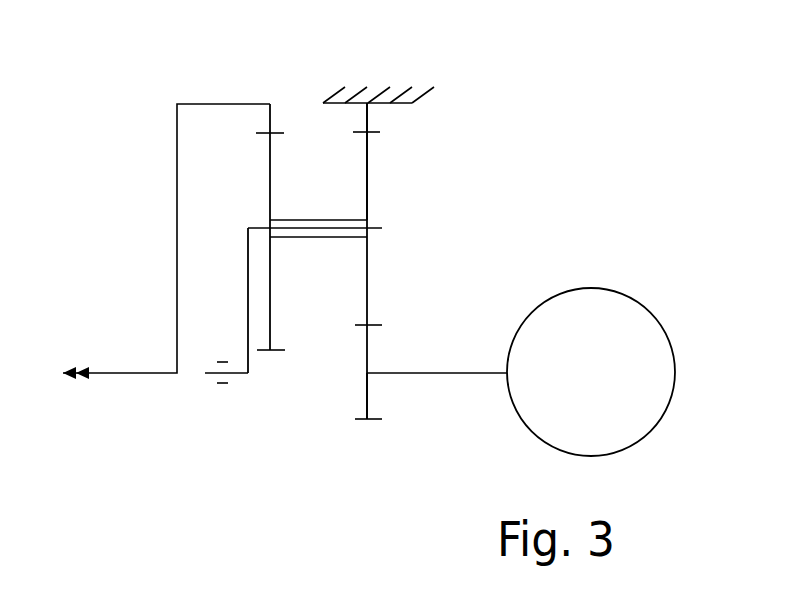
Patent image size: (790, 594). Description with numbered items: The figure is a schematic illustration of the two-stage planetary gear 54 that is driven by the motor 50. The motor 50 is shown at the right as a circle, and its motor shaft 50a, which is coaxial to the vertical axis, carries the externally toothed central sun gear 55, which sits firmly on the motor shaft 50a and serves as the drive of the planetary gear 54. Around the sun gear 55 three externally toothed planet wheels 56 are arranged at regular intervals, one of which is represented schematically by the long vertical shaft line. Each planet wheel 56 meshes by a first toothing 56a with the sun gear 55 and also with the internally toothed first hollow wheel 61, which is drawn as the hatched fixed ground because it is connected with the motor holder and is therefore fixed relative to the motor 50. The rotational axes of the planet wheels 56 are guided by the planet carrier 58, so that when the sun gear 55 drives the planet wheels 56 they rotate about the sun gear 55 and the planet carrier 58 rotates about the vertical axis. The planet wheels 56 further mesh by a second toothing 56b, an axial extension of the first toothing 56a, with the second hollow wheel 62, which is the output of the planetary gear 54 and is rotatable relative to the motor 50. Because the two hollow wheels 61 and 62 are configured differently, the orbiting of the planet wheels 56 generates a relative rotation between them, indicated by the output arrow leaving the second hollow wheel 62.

The motor 50 is at (612, 390).
The motor shaft 50a is at (438, 370).
The planetary gear 54 is at (442, 227).
The sun gear 55 is at (367, 390).
The planet wheels 56 is at (368, 288).
The first toothing 56a is at (369, 157).
The second toothing 56b is at (268, 146).
The planet carrier 58 is at (250, 352).
The first hollow wheel 61 is at (365, 120).
The second hollow wheel 62 is at (215, 103).